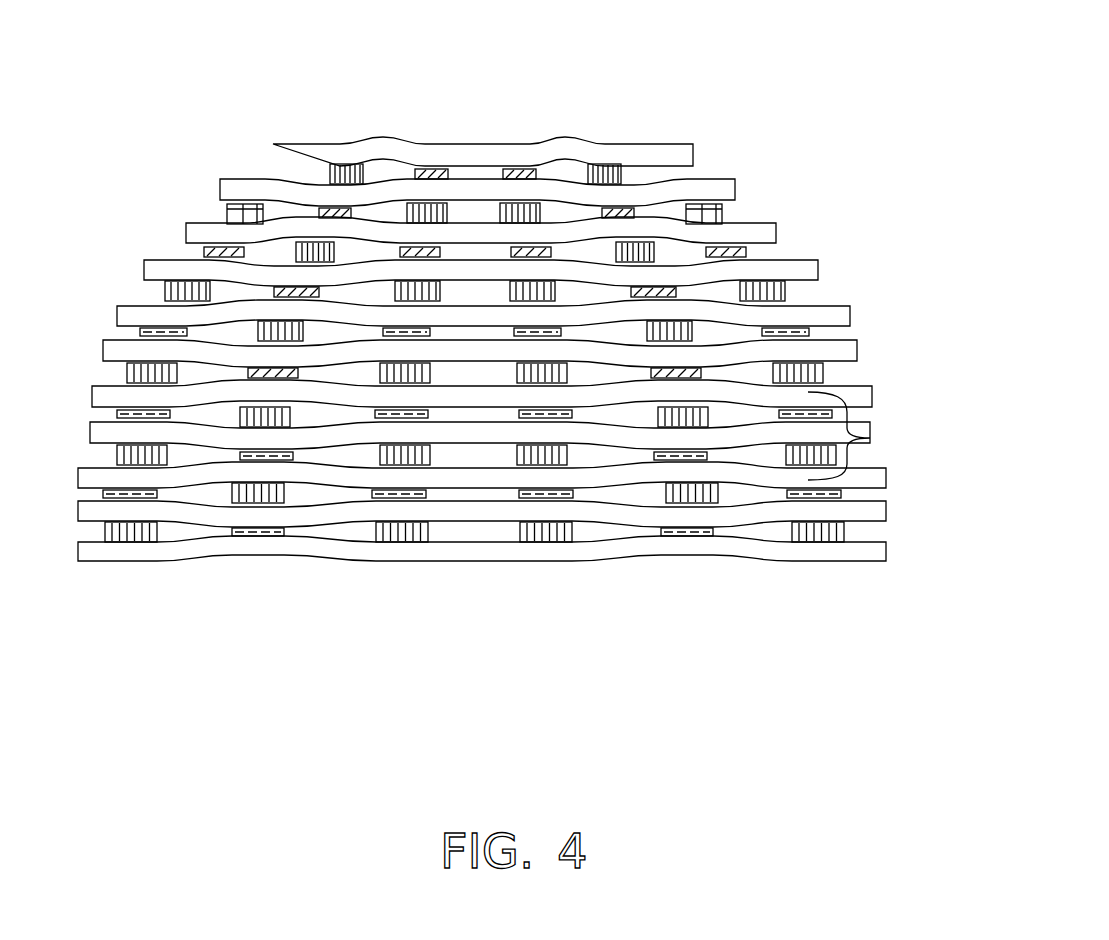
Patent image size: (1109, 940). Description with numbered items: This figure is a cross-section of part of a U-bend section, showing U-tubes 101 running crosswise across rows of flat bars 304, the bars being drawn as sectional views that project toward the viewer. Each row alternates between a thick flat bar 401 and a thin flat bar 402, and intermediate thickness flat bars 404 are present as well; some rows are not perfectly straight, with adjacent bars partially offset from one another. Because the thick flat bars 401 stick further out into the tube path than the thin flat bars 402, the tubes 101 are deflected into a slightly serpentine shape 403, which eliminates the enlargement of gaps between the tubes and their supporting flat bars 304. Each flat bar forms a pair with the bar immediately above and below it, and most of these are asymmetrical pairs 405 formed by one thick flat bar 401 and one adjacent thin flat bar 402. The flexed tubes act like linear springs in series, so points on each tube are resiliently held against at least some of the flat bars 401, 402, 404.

The U-tube 101 is at (540, 192).
The flat bar 304 is at (340, 164).
The thick flat bar 401 is at (418, 465).
The thin flat bar 402 is at (144, 418).
The serpentine shape 403 is at (707, 510).
The intermediate thickness flat bar 404 is at (722, 218).
The asymmetrical pair 405 is at (870, 438).